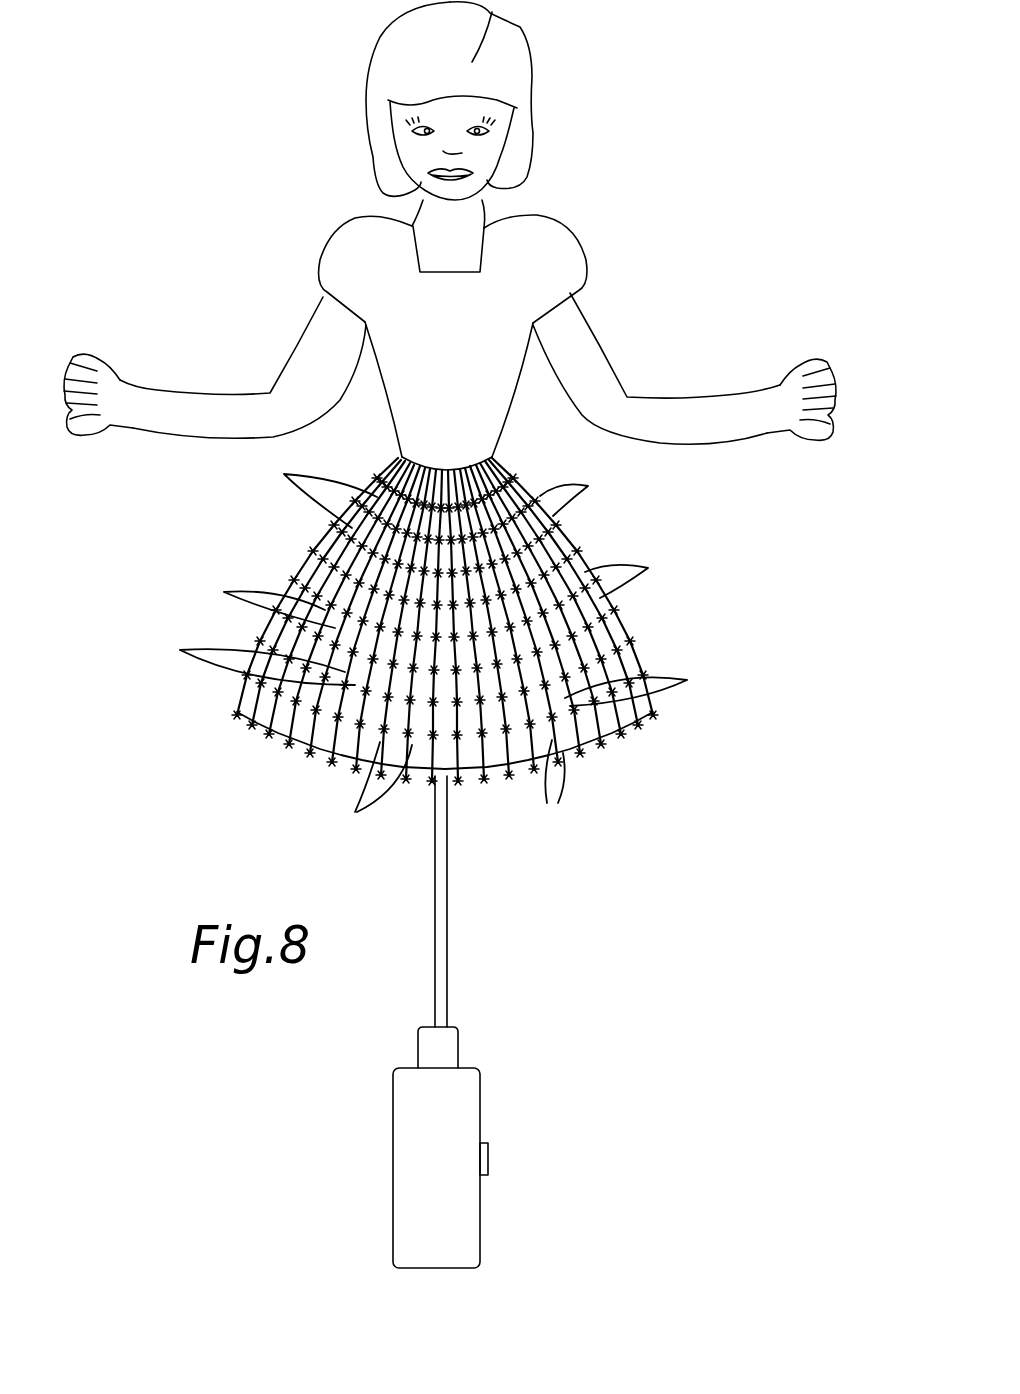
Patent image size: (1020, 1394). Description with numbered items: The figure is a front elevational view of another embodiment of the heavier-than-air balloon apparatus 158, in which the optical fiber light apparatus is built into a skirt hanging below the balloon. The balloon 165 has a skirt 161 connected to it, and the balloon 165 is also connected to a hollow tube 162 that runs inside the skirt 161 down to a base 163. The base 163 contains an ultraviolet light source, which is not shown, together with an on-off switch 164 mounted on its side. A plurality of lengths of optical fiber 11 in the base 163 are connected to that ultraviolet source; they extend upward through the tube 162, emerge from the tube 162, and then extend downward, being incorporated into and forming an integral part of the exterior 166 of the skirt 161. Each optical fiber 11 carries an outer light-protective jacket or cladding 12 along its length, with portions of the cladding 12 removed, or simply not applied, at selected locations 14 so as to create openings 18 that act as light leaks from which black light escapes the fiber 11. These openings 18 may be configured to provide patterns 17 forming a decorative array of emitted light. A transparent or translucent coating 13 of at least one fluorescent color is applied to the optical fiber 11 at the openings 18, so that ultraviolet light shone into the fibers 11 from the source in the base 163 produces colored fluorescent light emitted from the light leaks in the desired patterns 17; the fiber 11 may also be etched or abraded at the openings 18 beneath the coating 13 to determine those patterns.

The optical fiber 11 is at (282, 752).
The outer jacket or cladding 12 is at (433, 647).
The transparent or translucent coating 13 is at (474, 788).
The selected locations 14 is at (567, 722).
The patterns 17 is at (690, 765).
The openings 18 is at (455, 785).
The balloon apparatus 158 is at (739, 161).
The skirt 161 is at (586, 747).
The hollow tube 162 is at (447, 935).
The base 163 is at (459, 1166).
The on-off switch 164 is at (488, 1162).
The balloon 165 is at (553, 253).
The exterior of the skirt 166 is at (352, 760).